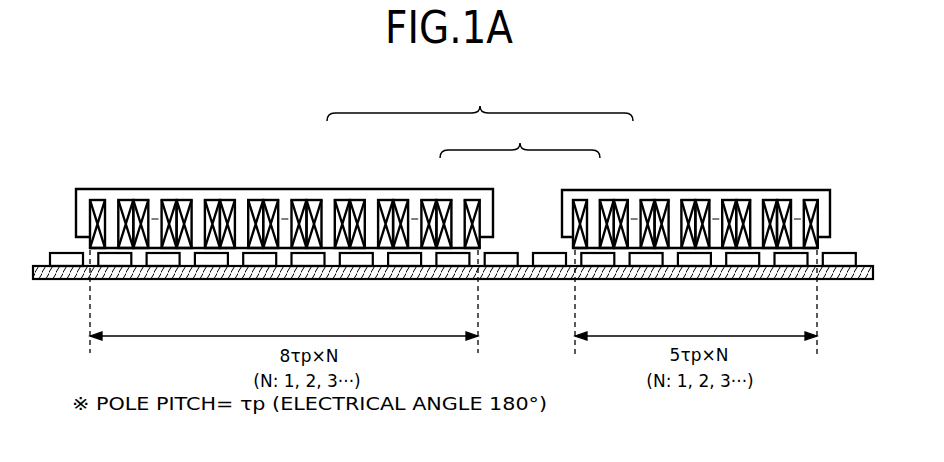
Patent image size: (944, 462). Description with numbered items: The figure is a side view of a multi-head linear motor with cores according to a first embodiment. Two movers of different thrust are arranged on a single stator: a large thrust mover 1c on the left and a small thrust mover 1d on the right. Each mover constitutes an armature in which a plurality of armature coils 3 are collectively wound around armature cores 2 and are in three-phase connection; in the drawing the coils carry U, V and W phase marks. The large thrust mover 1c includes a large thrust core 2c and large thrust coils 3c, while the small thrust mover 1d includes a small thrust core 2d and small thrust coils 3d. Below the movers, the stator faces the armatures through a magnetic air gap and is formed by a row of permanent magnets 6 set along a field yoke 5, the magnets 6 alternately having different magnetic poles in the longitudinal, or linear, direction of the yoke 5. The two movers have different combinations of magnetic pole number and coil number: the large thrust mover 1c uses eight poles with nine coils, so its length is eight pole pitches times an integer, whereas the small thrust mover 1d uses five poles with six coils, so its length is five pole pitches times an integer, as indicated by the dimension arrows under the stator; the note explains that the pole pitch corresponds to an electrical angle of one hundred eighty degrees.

The large thrust mover 1c is at (157, 189).
The small thrust mover 1d is at (718, 190).
The armature cores 2 is at (520, 139).
The large thrust core 2c is at (458, 203).
The small thrust core 2d is at (588, 203).
The armature coil 3 is at (480, 101).
The large thrust coil 3c is at (342, 203).
The small thrust coil 3d is at (624, 203).
The field yoke 5 is at (793, 280).
The permanent magnet 6 is at (845, 253).